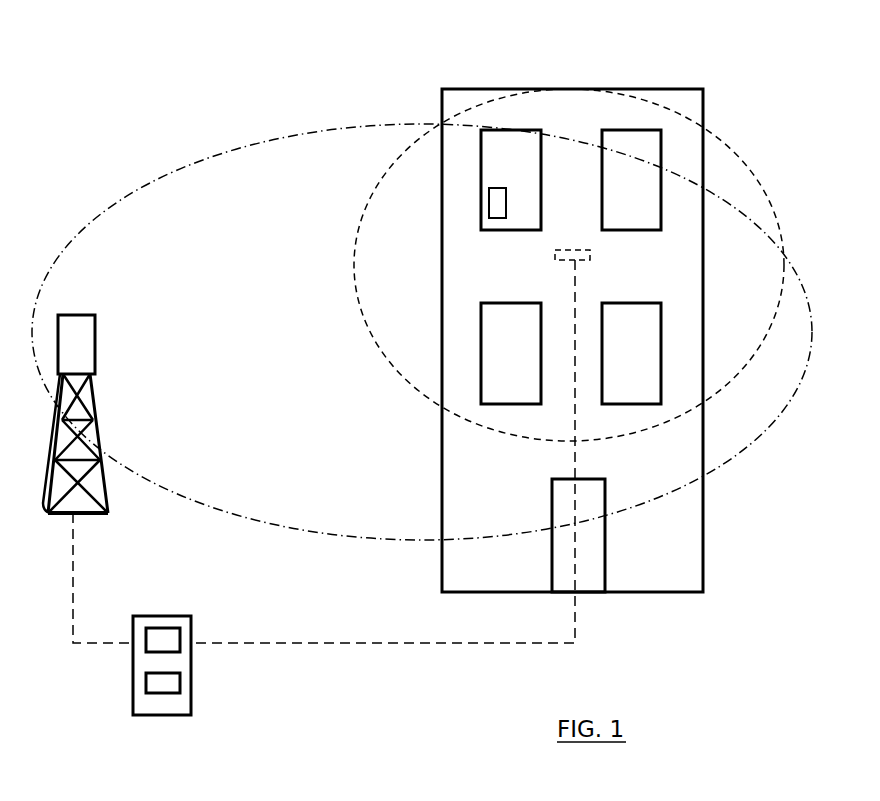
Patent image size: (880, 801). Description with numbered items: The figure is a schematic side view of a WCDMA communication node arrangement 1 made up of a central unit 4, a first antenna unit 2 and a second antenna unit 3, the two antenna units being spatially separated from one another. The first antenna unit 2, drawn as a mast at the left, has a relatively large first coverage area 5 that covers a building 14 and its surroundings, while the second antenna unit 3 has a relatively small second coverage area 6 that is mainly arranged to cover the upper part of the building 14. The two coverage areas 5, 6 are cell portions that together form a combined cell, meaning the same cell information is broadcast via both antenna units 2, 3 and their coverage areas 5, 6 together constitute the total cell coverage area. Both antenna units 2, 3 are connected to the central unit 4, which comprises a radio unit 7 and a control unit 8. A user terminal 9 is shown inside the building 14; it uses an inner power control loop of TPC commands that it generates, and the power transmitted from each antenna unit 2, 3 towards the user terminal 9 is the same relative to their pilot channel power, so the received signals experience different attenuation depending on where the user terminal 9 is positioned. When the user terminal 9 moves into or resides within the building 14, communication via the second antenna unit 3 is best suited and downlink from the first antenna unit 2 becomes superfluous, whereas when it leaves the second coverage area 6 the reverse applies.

The communication node arrangement 1 is at (143, 129).
The first antenna unit 2 is at (74, 338).
The second antenna unit 3 is at (570, 248).
The central unit 4 is at (163, 680).
The first coverage area 5 is at (308, 204).
The second coverage area 6 is at (747, 188).
The radio unit 7 is at (155, 641).
The control unit 8 is at (167, 684).
The user terminal 9 is at (497, 203).
The building 14 is at (575, 110).